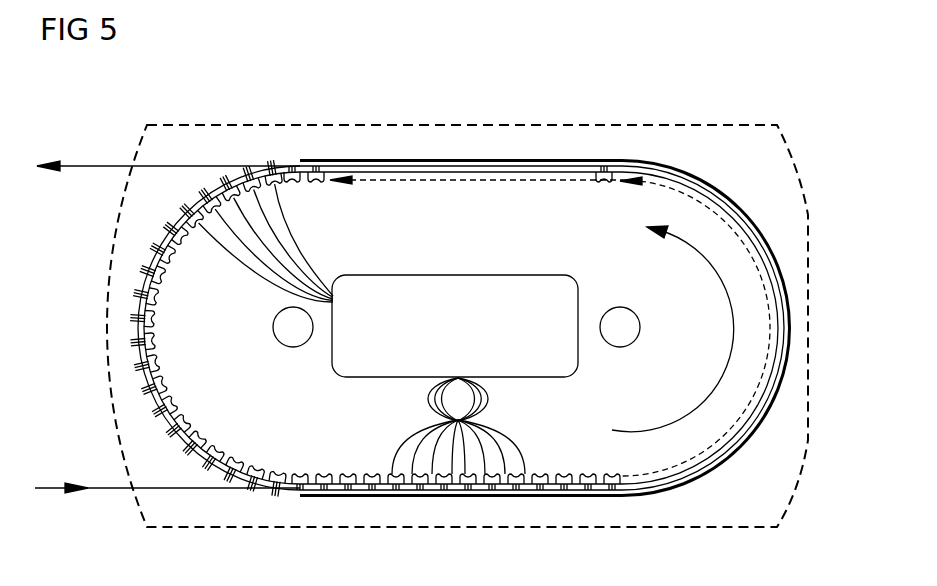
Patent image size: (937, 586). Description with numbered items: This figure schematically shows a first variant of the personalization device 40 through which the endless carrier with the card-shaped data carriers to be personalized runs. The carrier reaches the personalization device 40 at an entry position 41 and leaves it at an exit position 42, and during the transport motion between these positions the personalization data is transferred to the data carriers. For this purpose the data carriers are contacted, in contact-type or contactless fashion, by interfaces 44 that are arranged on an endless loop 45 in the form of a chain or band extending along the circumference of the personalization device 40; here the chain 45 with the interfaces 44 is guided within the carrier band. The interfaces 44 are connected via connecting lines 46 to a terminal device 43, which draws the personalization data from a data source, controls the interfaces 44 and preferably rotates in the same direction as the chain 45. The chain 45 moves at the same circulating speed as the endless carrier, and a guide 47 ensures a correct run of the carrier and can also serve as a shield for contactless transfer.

The personalization device 40 is at (613, 125).
The entry position 41 is at (292, 492).
The exit position 42 is at (292, 166).
The terminal device 43 is at (452, 289).
The interfaces 44 is at (138, 349).
The endless loop 45 is at (138, 310).
The connecting lines 46 is at (527, 440).
The guide 47 is at (740, 443).